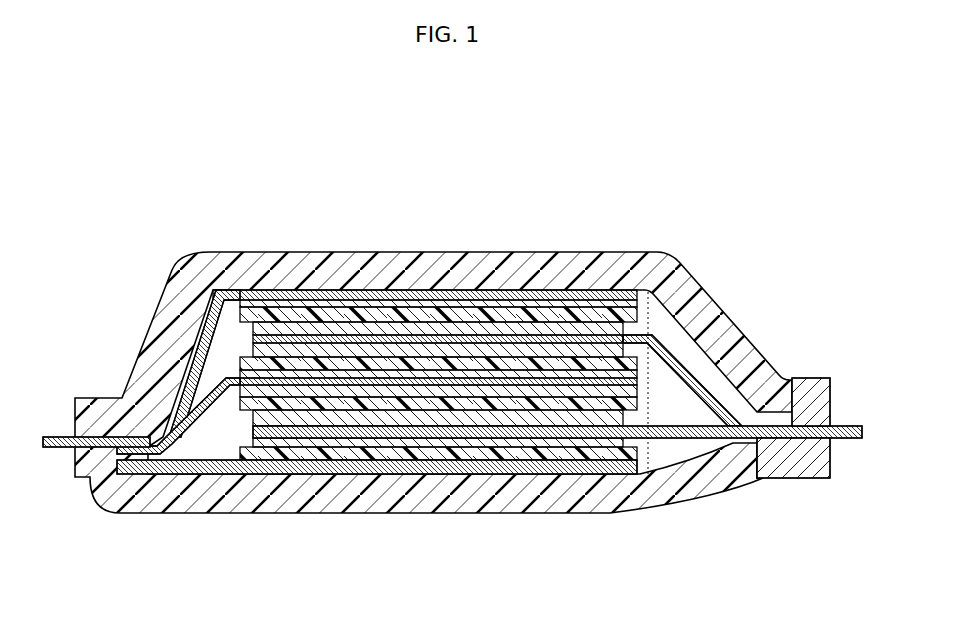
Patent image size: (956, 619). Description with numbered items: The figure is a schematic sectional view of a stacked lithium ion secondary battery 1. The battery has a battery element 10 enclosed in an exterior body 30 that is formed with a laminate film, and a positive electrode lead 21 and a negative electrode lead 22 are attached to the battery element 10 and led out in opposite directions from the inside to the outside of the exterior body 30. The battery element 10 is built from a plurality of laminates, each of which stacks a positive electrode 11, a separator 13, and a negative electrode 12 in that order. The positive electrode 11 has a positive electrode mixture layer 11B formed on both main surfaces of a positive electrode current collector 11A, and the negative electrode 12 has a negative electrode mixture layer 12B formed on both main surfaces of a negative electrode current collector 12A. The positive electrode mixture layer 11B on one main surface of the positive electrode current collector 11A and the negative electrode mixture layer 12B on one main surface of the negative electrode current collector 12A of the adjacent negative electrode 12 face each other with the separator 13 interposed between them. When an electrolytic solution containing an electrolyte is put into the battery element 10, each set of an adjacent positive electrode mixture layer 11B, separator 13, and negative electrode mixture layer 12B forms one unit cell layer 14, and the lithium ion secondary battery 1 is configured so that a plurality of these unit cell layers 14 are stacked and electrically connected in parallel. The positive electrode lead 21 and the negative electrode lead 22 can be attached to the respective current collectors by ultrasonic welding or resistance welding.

The lithium ion secondary battery 1 is at (143, 245).
The battery element 10 is at (648, 388).
The positive electrode 11 is at (500, 196).
The positive electrode current collector 11A is at (440, 339).
The positive electrode mixture layer 11B is at (333, 328).
The negative electrode 12 is at (640, 196).
The negative electrode current collector 12A is at (180, 333).
The negative electrode mixture layer 12B is at (257, 313).
The separator 13 is at (303, 303).
The unit cell layer 14 is at (350, 196).
The positive electrode lead 21 is at (842, 432).
The negative electrode lead 22 is at (62, 435).
The exterior body 30 is at (808, 377).